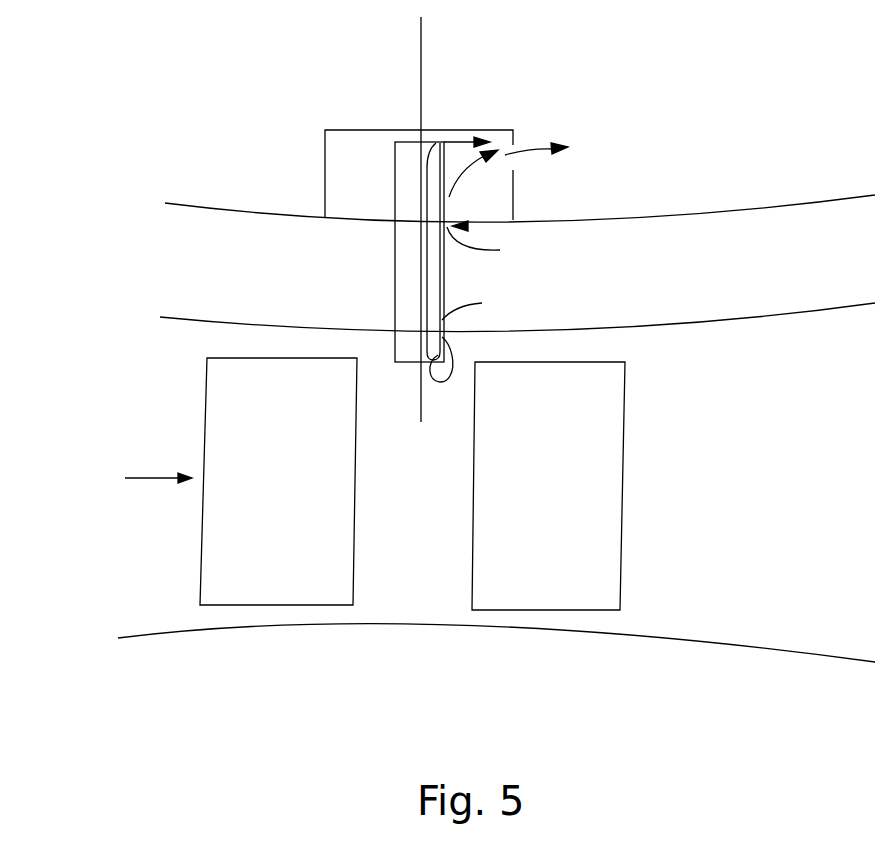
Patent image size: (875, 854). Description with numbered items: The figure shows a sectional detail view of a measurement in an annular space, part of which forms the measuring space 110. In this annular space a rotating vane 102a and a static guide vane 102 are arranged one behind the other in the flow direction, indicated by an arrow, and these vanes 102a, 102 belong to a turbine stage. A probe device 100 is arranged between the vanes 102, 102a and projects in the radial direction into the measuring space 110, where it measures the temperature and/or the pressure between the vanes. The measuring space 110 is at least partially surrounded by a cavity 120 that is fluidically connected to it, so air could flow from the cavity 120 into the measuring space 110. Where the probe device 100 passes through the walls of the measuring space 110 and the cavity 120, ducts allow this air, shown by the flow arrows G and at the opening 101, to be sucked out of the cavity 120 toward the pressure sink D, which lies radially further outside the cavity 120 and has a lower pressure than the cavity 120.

The probe device 100 is at (417, 397).
The nozzle opening 101 is at (467, 220).
The static guide vane 102 is at (548, 596).
The rotating vane 102a is at (290, 595).
The measuring space 110 is at (772, 507).
The cavity 120 is at (775, 278).
The gas flow G is at (448, 198).
The pressure sink D is at (502, 78).